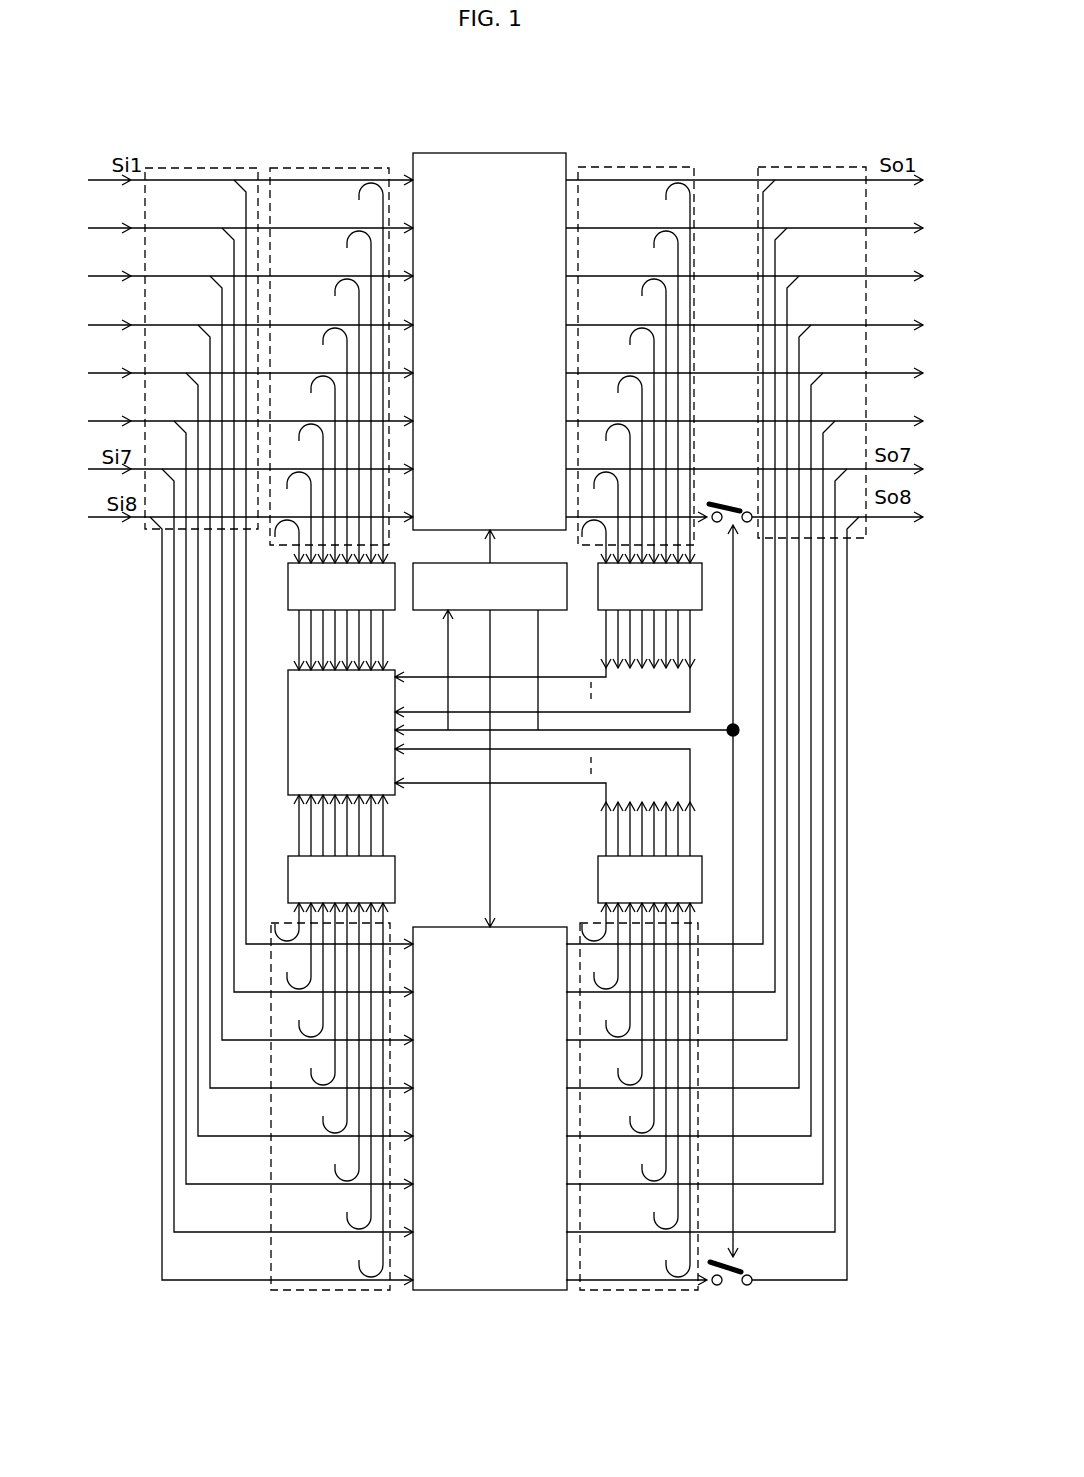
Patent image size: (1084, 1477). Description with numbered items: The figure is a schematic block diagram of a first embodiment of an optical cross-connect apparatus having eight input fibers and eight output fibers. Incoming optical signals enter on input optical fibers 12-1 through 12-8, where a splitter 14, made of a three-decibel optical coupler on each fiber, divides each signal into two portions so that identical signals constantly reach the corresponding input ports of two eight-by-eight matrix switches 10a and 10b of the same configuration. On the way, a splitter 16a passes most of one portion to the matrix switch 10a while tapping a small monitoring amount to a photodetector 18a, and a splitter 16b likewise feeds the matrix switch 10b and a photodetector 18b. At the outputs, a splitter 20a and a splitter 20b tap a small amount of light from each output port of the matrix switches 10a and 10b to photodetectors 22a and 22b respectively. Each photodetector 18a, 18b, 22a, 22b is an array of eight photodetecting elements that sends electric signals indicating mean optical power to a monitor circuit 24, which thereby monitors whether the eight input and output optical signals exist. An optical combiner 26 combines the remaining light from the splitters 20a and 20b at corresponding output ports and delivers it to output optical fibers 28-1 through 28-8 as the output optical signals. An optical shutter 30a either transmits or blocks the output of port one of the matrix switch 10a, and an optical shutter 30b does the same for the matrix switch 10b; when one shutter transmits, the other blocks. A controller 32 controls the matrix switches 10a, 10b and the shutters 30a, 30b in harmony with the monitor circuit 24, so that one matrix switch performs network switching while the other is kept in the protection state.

The matrix switch 10a is at (488, 166).
The matrix switch 10b is at (514, 935).
The input optical fiber 12-1 is at (104, 184).
The input optical fiber 12-8 is at (100, 522).
The splitter 14 is at (218, 167).
The splitter 16a is at (331, 167).
The splitter 16b is at (350, 1292).
The photodetector 18a is at (290, 600).
The photodetector 18b is at (295, 874).
The splitter 20a is at (641, 166).
The splitter 20b is at (645, 1292).
The photodetector 22a is at (598, 614).
The photodetector 22b is at (597, 878).
The monitor circuit 24 is at (295, 718).
The optical combiner 26 is at (810, 166).
The output optical fiber 28-1 is at (890, 184).
The output optical fiber 28-8 is at (890, 522).
The optical shutter 30a is at (734, 508).
The optical shutter 30b is at (733, 1288).
The controller 32 is at (506, 610).